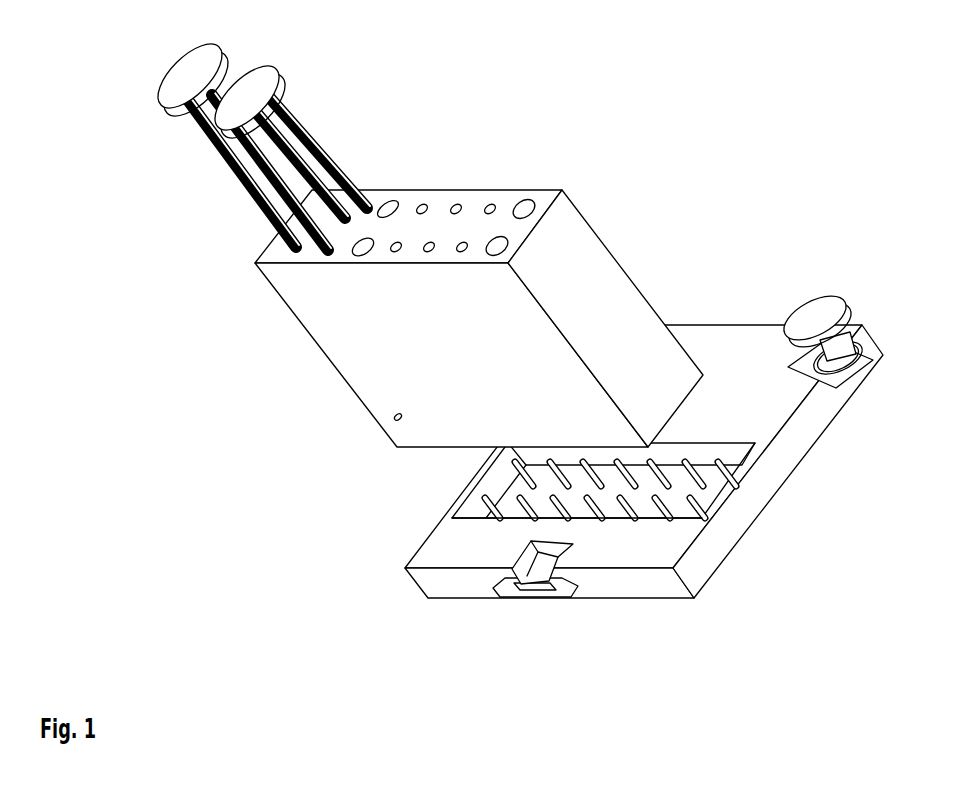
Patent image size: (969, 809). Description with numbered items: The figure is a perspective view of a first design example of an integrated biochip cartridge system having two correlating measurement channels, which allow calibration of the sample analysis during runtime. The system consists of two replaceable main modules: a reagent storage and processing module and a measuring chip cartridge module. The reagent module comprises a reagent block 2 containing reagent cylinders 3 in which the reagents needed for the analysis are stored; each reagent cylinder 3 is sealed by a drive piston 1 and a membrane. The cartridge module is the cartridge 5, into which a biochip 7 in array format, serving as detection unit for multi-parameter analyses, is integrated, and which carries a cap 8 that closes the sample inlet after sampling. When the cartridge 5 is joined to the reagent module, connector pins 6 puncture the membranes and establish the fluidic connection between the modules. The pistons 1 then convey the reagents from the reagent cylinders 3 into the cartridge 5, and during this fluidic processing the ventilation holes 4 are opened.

The piston 1 is at (298, 100).
The reagent block 2 is at (587, 202).
The reagent cylinder 3 is at (390, 209).
The ventilation hole 4 is at (388, 421).
The cartridge 5 is at (412, 550).
The connector pin 6 is at (695, 500).
The biochip 7 is at (537, 584).
The cap 8 is at (841, 290).